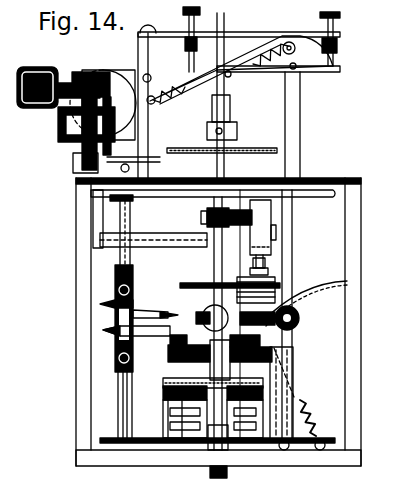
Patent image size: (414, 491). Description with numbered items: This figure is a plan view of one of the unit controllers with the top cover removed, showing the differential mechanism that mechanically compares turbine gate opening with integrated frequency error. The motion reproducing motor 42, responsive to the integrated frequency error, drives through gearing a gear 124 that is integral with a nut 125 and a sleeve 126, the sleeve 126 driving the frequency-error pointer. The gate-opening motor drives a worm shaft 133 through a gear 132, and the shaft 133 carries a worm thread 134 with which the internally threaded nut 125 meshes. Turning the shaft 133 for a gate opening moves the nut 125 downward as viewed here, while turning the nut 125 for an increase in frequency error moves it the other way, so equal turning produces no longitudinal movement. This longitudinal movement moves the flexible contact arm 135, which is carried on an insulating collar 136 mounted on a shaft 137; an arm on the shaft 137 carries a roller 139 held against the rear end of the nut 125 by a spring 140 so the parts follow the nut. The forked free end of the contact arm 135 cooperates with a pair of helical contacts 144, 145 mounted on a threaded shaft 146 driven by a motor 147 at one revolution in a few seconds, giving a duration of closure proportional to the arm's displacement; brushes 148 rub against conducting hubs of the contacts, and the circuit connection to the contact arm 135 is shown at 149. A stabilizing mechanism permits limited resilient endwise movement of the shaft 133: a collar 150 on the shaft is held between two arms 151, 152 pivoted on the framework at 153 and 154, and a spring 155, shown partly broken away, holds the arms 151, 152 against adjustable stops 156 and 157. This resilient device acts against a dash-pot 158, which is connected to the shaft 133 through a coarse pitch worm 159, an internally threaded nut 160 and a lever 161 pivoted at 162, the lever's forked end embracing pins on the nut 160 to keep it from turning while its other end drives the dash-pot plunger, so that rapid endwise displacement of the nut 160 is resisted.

The motion reproducing motor 42 is at (267, 295).
The gear 124 is at (166, 386).
The nut 125 is at (178, 371).
The sleeve 126 is at (176, 420).
The gear 132 is at (256, 150).
The worm shaft 133 is at (226, 162).
The worm thread 134 is at (178, 356).
The flexible contact arm 135 is at (165, 312).
The insulating collar 136 is at (300, 326).
The shaft 137 is at (295, 317).
The roller 139 is at (239, 288).
The spring 140 is at (304, 415).
The contact 144 is at (100, 304).
The contact 145 is at (103, 330).
The shaft 146 is at (118, 212).
The motor 147 is at (41, 108).
The brushes 148 is at (115, 290).
The circuit connection 149 is at (327, 282).
The collar 150 is at (231, 75).
The arm 151 is at (316, 75).
The arm 152 is at (208, 88).
The pivot 153 is at (296, 69).
The pivot 154 is at (144, 75).
The spring 155 is at (259, 58).
The adjustable stop 156 is at (336, 58).
The adjustable stop 157 is at (188, 62).
The dash-pot 158 is at (125, 116).
The coarse pitch worm 159 is at (220, 227).
The internally threaded nut 160 is at (213, 231).
The lever 161 is at (95, 196).
The pivot 162 is at (97, 237).